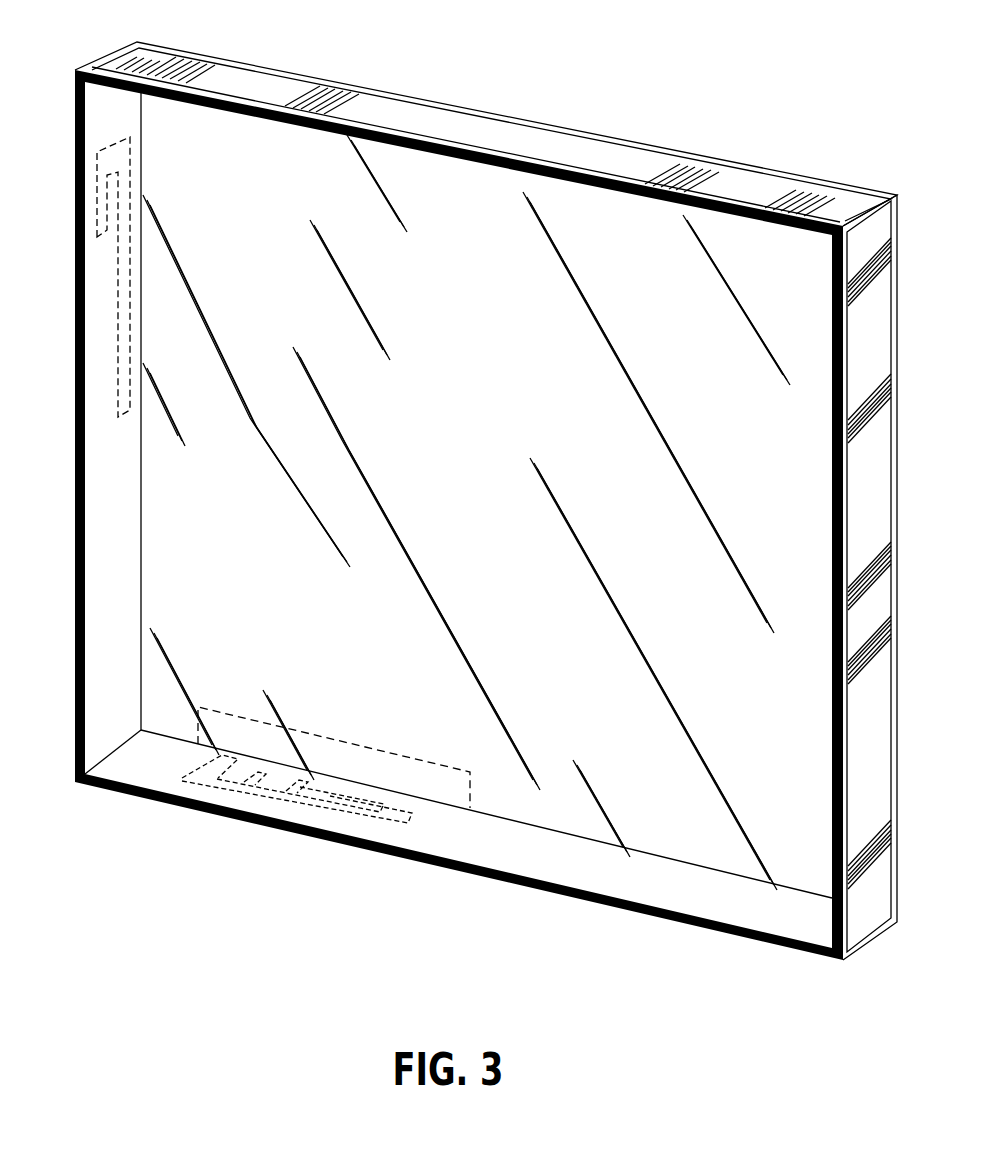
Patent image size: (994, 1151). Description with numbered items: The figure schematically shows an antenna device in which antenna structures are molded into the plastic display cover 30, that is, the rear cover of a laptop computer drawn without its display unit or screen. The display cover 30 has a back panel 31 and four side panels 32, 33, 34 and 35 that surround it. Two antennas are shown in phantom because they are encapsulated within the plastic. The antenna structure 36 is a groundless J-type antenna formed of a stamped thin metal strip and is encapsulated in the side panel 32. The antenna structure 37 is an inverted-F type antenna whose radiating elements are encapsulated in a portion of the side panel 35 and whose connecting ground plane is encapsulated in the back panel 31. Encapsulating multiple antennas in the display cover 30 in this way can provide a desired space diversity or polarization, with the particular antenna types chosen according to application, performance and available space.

The plastic display cover 30 is at (170, 828).
The back panel 31 is at (439, 442).
The side panel 32 is at (100, 457).
The side panel 33 is at (462, 138).
The side panel 34 is at (874, 488).
The side panel 35 is at (585, 877).
The antenna structure 36 is at (128, 312).
The antenna structure 37 is at (342, 726).